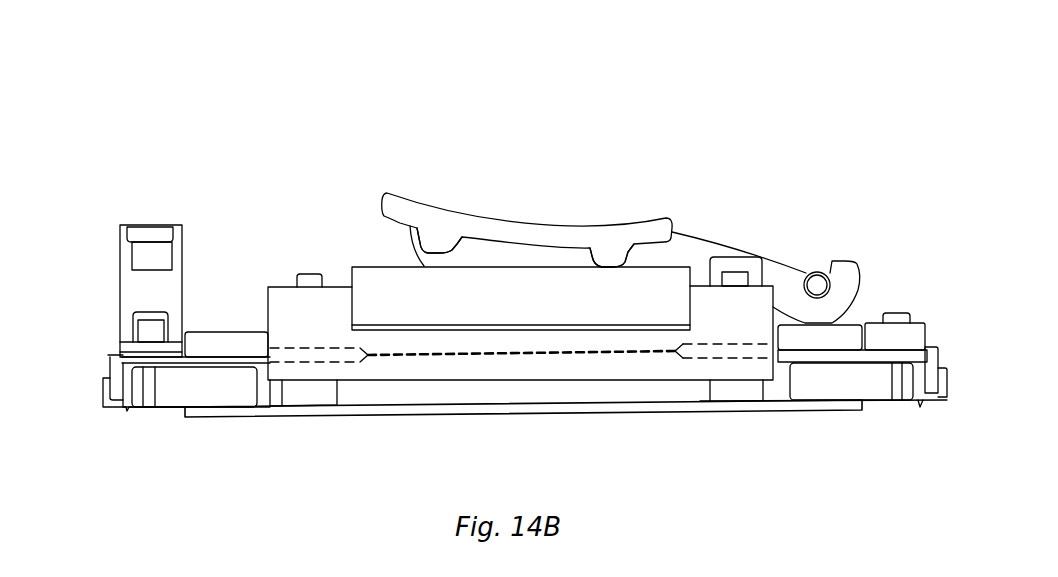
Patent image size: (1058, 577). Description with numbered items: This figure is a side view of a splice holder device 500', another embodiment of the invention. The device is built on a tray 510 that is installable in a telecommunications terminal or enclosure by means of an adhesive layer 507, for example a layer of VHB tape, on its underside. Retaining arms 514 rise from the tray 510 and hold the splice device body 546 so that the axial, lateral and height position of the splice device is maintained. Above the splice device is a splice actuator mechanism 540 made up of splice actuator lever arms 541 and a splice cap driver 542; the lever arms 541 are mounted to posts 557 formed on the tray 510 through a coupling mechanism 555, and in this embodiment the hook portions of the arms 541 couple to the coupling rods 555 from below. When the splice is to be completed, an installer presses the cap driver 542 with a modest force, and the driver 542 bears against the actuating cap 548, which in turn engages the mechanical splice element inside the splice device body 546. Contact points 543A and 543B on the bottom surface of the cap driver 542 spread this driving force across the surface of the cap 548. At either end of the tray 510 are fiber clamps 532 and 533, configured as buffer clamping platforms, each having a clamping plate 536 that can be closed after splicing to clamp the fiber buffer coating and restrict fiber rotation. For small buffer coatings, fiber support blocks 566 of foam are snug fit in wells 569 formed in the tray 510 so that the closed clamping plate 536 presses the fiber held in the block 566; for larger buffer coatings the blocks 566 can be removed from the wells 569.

The splice holder device 500' is at (504, 260).
The adhesive layer 507 is at (440, 411).
The tray 510 is at (367, 395).
The retaining arms 514 is at (300, 273).
The fiber clamp 532 is at (152, 222).
The fiber clamp 533 is at (895, 306).
The clamping plate 536 is at (170, 290).
The splice actuator mechanism 540 is at (413, 194).
The splice actuator lever arms 541 is at (688, 247).
The splice cap driver 542 is at (535, 236).
The contact point 543A is at (438, 237).
The contact point 543B is at (610, 252).
The splice device body 546 is at (730, 313).
The actuating cap 548 is at (605, 305).
The coupling mechanism 555 is at (817, 285).
The posts 557 is at (817, 285).
The fiber support blocks 566 is at (118, 355).
The wells 569 is at (108, 408).